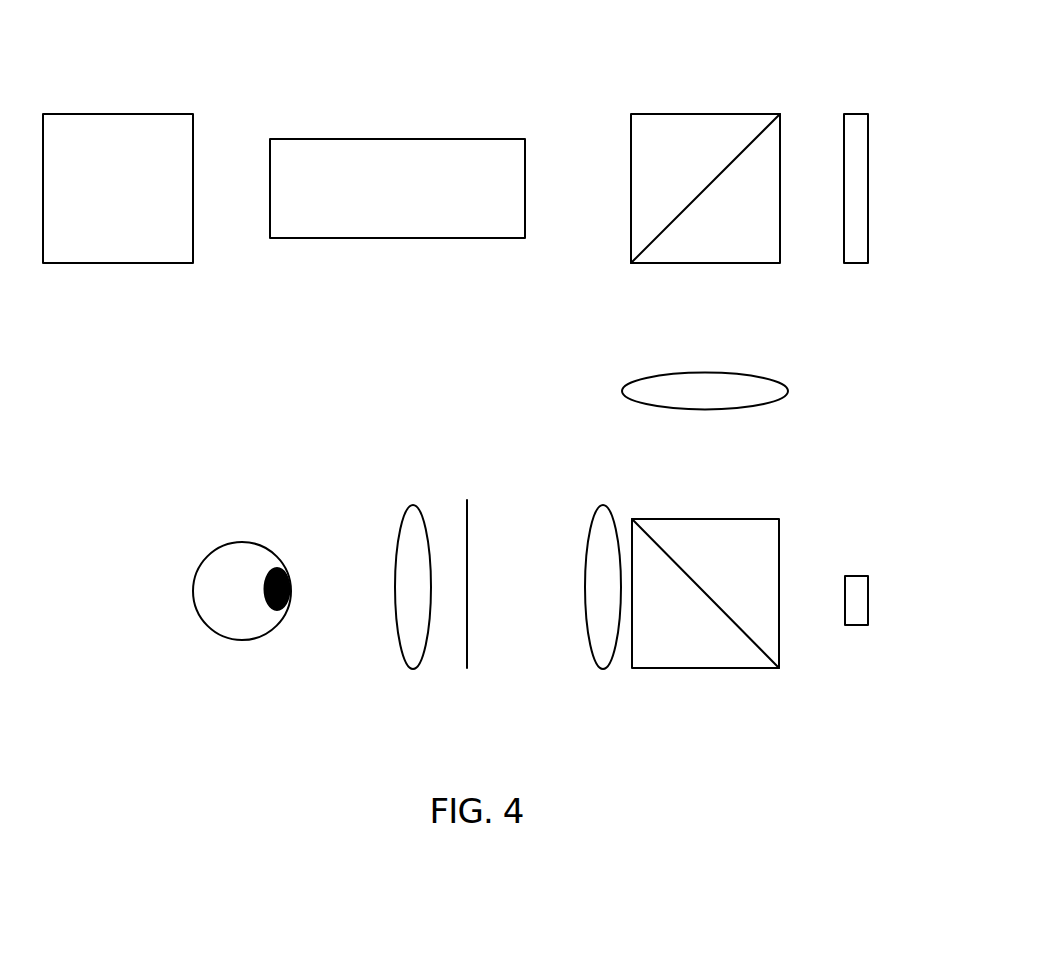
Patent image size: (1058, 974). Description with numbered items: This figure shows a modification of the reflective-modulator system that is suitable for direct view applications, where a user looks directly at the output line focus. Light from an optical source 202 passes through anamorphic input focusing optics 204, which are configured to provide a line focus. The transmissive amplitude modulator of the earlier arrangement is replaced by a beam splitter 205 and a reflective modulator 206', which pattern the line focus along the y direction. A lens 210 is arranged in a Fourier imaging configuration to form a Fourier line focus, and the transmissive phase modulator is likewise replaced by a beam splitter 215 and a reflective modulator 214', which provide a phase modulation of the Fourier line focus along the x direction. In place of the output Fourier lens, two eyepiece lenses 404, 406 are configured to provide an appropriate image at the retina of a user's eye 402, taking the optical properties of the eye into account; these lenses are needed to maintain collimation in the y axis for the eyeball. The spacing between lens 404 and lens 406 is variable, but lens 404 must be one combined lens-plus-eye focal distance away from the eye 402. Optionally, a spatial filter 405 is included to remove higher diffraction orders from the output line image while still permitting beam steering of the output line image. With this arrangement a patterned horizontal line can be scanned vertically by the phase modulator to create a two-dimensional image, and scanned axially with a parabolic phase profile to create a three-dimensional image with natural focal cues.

The optical source 202 is at (118, 188).
The anamorphic input focusing optics 204 is at (397, 188).
The beam splitter 205 is at (671, 152).
The reflective modulator 206' is at (903, 188).
The user's eye 402 is at (232, 555).
The lens 404 is at (412, 520).
The spatial filter 405 is at (468, 657).
The lens 406 is at (600, 522).
The lens 210 is at (707, 398).
The beam splitter 215 is at (677, 648).
The reflective modulator 214' is at (902, 600).